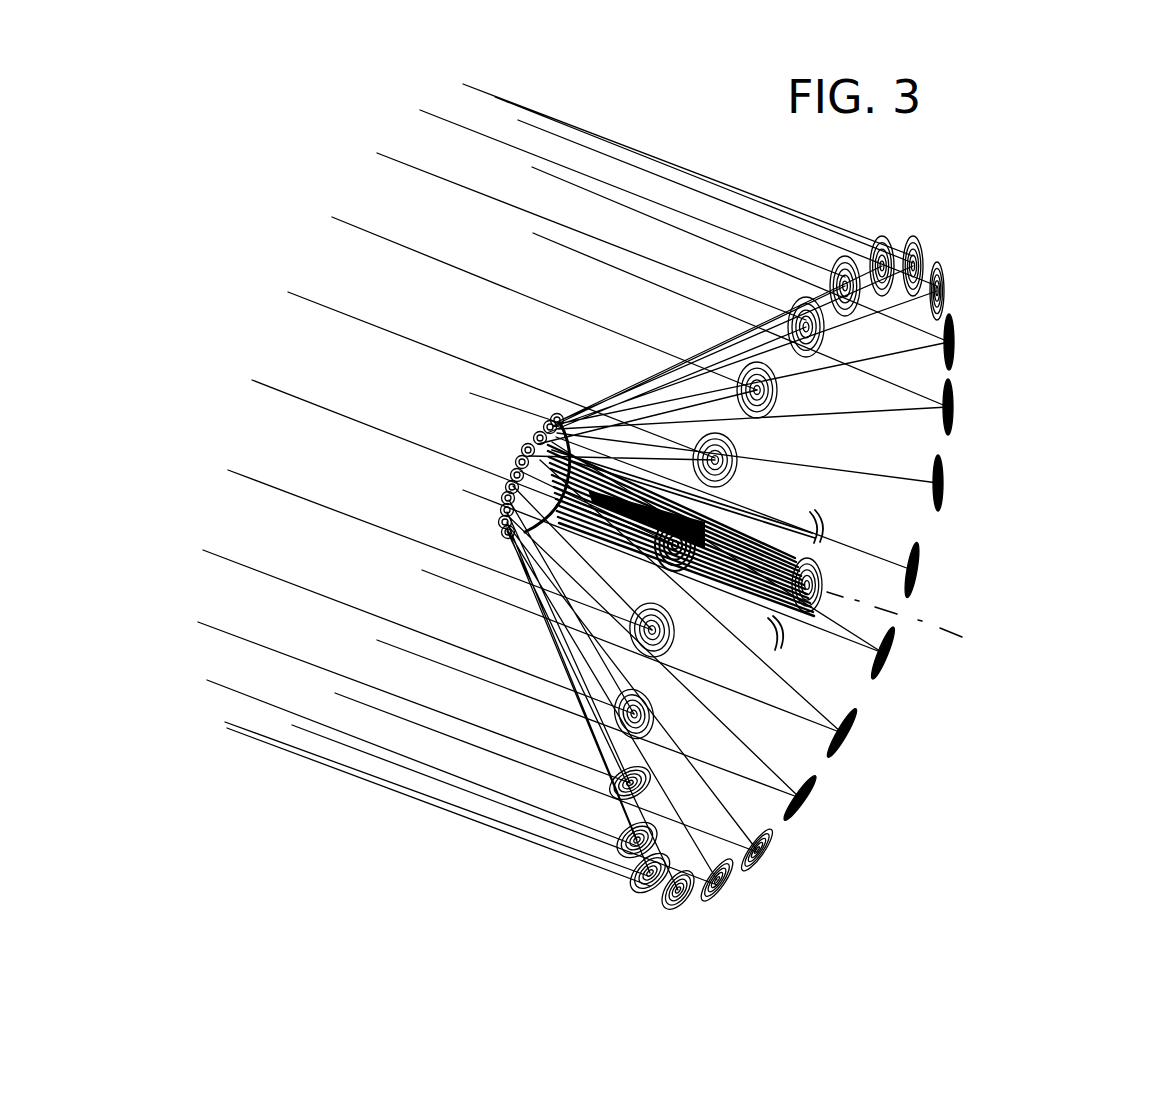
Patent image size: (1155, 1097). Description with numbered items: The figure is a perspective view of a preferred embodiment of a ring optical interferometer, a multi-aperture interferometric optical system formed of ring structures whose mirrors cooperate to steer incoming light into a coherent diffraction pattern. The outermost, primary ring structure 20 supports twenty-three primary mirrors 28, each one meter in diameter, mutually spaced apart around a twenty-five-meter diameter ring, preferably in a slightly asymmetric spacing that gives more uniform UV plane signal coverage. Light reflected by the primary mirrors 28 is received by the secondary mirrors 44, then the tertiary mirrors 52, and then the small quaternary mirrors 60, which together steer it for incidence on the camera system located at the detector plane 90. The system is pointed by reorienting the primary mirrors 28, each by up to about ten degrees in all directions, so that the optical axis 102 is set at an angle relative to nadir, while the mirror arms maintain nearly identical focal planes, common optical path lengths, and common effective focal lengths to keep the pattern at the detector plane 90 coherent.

The primary ring structure 20 is at (983, 290).
The primary mirrors 28 is at (803, 352).
The secondary mirrors 44 is at (507, 472).
The tertiary mirrors 52 is at (815, 530).
The quaternary mirrors 60 is at (555, 416).
The detector plane 90 is at (823, 576).
The optical axis 102 is at (962, 637).